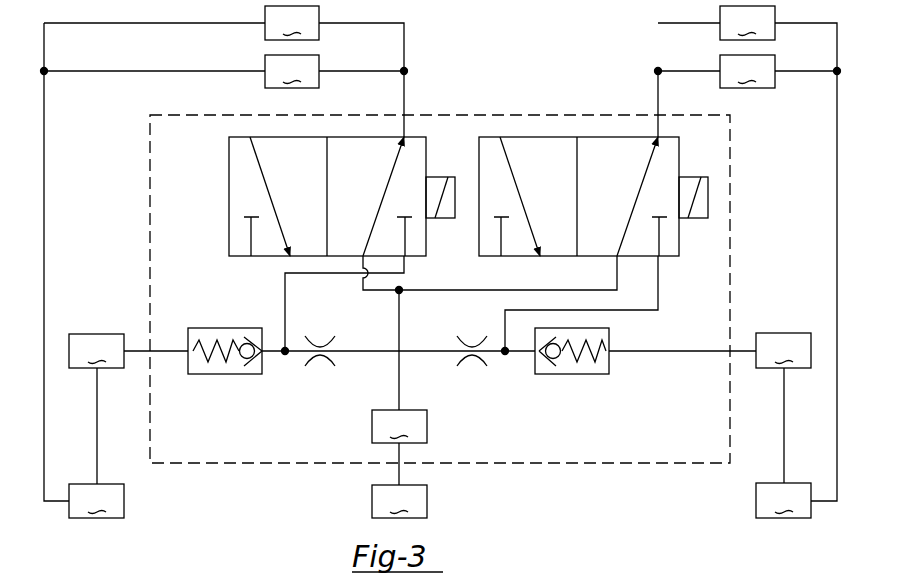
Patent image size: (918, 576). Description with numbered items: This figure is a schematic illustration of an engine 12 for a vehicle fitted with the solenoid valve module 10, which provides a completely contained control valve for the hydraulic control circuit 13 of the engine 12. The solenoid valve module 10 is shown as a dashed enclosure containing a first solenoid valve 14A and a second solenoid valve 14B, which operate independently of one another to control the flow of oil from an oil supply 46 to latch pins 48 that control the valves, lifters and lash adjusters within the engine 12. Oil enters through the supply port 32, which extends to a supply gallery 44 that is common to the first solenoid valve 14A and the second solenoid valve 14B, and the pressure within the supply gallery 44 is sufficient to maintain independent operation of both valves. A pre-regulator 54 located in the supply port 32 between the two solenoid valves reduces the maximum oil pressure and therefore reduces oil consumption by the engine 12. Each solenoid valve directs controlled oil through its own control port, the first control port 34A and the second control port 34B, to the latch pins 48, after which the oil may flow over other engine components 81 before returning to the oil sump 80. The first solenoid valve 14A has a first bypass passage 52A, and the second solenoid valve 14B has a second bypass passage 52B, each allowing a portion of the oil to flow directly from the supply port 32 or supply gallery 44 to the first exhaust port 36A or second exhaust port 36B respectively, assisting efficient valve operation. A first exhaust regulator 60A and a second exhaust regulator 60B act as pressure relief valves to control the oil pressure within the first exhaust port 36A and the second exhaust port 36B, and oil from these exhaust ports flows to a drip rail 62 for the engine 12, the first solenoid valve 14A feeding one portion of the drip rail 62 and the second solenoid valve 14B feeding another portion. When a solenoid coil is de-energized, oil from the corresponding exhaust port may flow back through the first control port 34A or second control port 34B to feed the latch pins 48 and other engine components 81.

The solenoid valve module 10 is at (150, 173).
The engine 12 is at (152, 64).
The hydraulic control circuit 13 is at (229, 64).
The first solenoid valve 14A is at (229, 197).
The second solenoid valve 14B is at (546, 137).
The supply port 32 is at (399, 374).
The first control port 34A is at (404, 95).
The second control port 34B is at (658, 95).
The first exhaust port 36A is at (285, 300).
The second exhaust port 36B is at (658, 283).
The supply gallery 44 is at (400, 313).
The oil supply 46 is at (399, 501).
The latch pins 48 is at (520, 71).
The first bypass passage 52A is at (368, 350).
The second bypass passage 52B is at (432, 352).
The pre-regulator 54 is at (399, 426).
The first exhaust regulator 60A is at (227, 328).
The second exhaust regulator 60B is at (572, 374).
The drip rail 62 is at (440, 350).
The oil sump 80 is at (440, 500).
The other engine components 81 is at (520, 23).